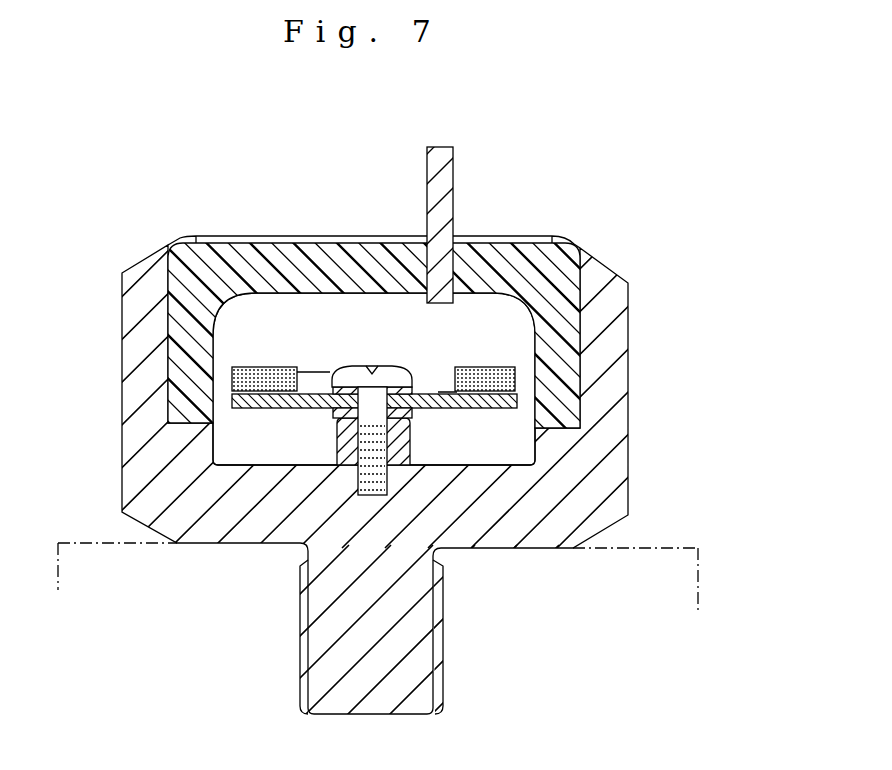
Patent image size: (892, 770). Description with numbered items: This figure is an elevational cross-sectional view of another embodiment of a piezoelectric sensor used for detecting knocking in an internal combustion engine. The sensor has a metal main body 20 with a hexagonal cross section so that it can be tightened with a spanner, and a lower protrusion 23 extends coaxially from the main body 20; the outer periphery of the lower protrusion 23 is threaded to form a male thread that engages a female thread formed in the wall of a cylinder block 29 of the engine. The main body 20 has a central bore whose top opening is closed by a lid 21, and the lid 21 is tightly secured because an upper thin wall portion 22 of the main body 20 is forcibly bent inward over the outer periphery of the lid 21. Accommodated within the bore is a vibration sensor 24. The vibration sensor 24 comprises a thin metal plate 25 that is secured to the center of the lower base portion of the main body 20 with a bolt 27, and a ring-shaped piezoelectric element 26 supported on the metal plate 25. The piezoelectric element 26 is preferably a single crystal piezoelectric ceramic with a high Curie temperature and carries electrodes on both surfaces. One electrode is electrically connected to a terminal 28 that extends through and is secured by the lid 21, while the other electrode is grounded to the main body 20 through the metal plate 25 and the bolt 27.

The main body 20 is at (613, 443).
The lid 21 is at (292, 262).
The upper thin wall portion 22 is at (197, 238).
The lower protrusion 23 is at (427, 660).
The vibration sensor 24 is at (511, 352).
The thin metal plate 25 is at (257, 410).
The piezoelectric element 26 is at (232, 366).
The bolt 27 is at (350, 365).
The terminal 28 is at (452, 163).
The cylinder block 29 is at (672, 550).